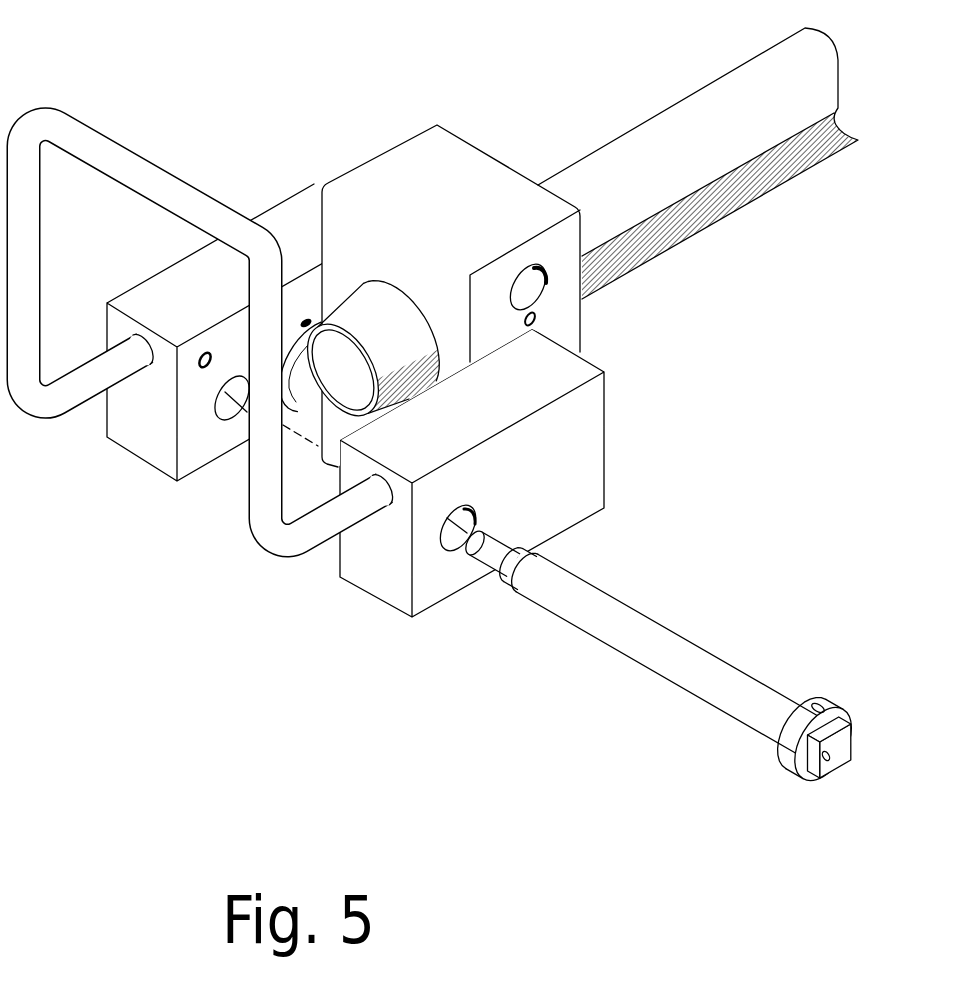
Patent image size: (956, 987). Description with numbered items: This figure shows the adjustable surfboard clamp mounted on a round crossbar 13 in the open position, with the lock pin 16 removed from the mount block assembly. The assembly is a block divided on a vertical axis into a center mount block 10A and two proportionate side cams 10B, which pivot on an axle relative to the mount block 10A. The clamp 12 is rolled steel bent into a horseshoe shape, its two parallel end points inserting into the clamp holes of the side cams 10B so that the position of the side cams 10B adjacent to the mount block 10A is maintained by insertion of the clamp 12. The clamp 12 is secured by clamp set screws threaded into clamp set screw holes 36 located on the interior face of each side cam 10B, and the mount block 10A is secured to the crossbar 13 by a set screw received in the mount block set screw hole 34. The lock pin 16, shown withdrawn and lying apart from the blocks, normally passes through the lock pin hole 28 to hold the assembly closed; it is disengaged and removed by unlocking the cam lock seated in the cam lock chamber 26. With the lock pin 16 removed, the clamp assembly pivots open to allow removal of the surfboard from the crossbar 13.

The mount block 10A is at (467, 141).
The side cam 10B is at (158, 305).
The clamp 12 is at (65, 108).
The rod 13 is at (772, 199).
The lock pin 16 is at (615, 590).
The cam lock chamber 26 is at (296, 316).
The lock pin hole 28 is at (237, 370).
The mount block set screw hole 34 is at (540, 321).
The clamp set screw hole 36 is at (207, 343).